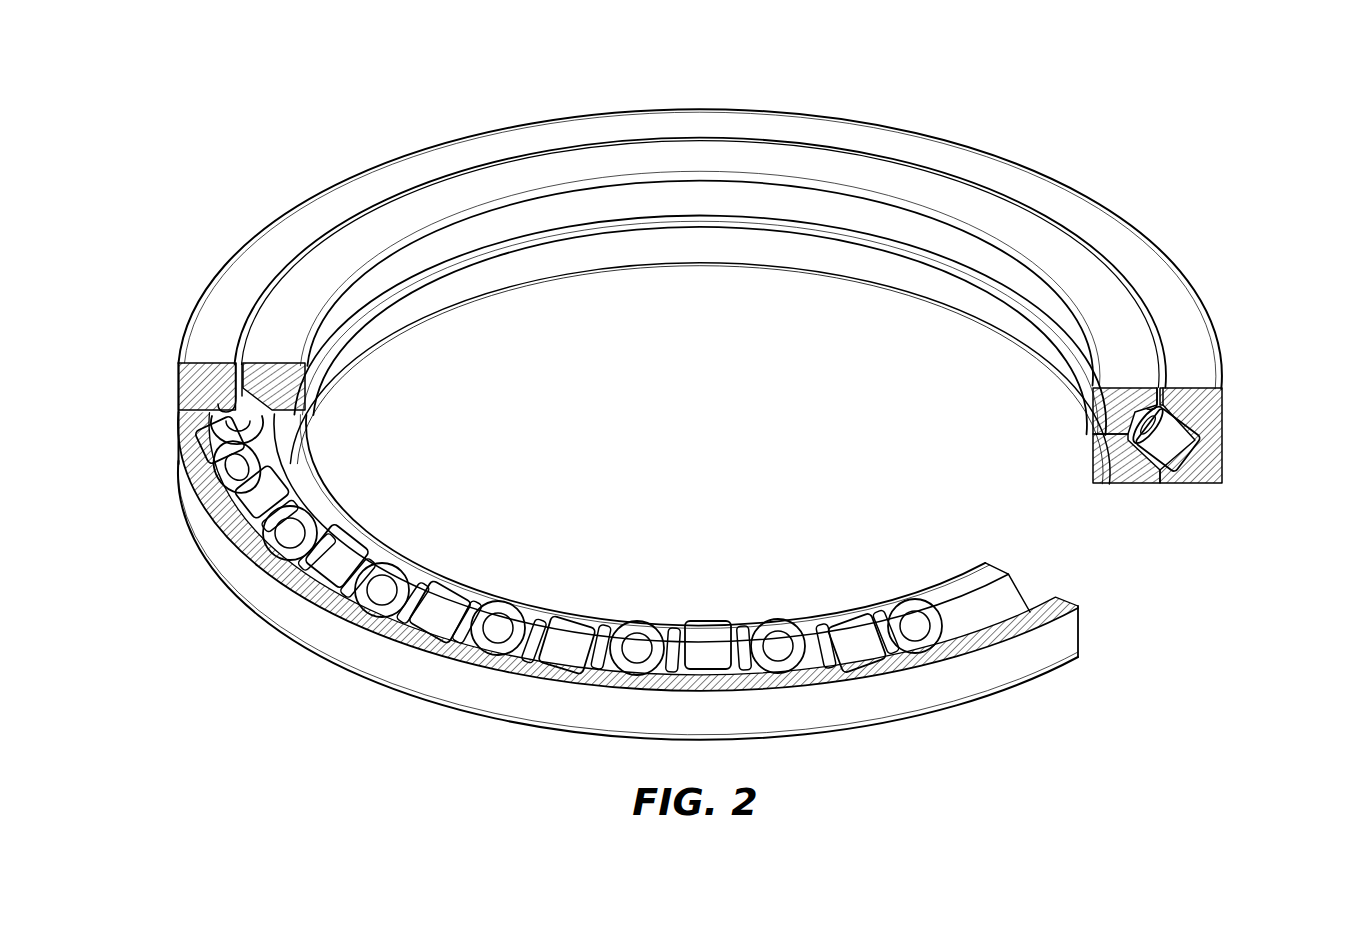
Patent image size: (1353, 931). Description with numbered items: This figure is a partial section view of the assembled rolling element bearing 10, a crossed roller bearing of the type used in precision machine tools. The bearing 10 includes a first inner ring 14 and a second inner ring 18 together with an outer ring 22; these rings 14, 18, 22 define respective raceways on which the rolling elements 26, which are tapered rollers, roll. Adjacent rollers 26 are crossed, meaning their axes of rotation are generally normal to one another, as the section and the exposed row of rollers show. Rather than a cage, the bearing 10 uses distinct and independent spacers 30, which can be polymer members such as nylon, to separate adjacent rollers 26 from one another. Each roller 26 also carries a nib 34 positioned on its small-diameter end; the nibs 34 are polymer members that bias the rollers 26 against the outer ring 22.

The rolling element bearing 10 is at (739, 395).
The first inner ring 14 is at (790, 248).
The second inner ring 18 is at (776, 205).
The outer ring 22 is at (1160, 285).
The rolling elements 26 is at (1200, 418).
The spacers 30 is at (805, 630).
The nib 34 is at (1148, 400).